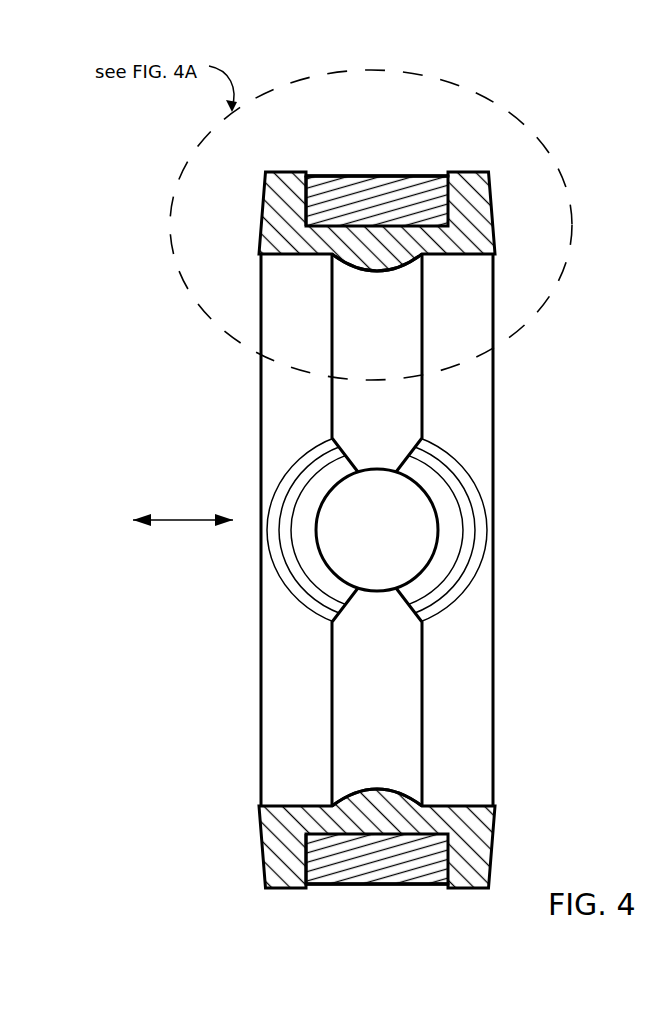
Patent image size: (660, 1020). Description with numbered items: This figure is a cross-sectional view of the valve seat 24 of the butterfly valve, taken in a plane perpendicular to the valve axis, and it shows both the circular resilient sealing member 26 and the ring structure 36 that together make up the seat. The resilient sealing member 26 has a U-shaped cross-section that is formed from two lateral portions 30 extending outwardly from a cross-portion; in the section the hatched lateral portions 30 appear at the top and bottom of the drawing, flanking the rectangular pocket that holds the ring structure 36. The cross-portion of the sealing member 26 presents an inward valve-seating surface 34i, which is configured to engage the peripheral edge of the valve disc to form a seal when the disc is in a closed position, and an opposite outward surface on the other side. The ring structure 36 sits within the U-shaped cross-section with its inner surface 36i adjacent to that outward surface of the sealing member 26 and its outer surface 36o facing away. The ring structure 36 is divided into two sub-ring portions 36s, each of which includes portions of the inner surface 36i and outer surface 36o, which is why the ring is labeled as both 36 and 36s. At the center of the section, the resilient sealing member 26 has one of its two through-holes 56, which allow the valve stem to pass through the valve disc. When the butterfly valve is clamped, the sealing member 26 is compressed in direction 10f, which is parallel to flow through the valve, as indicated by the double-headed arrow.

The valve seat 24 is at (530, 362).
The circular resilient sealing member 26 is at (462, 343).
The lateral portions 30 is at (277, 203).
The ring structure 36 is at (414, 531).
The sub-ring portions 36s is at (368, 183).
The inner surface 36i is at (325, 231).
The outer surface 36o is at (357, 175).
The inward valve-seating surface 34i is at (353, 272).
The through-holes 56 is at (437, 550).
The direction parallel to flow 10f is at (165, 519).